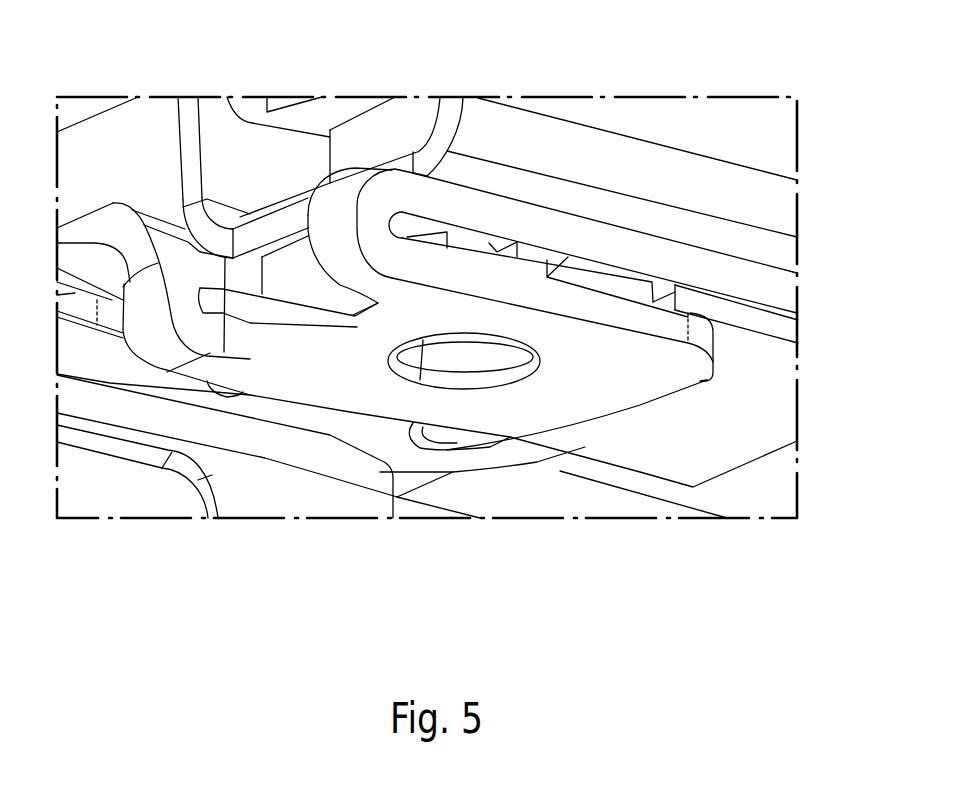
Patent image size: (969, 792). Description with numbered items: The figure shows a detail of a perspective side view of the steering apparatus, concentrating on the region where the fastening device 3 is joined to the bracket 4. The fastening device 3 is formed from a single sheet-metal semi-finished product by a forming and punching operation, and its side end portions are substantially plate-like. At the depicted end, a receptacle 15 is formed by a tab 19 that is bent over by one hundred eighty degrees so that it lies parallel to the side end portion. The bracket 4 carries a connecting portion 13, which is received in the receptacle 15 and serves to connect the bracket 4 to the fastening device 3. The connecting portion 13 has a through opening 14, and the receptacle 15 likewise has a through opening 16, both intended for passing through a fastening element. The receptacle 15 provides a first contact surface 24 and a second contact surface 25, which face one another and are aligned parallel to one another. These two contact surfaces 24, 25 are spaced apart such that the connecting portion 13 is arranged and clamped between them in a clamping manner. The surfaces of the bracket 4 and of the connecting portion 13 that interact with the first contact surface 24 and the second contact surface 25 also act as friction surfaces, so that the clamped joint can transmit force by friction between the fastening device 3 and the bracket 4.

The fastening device 3 is at (785, 244).
The bracket 4 is at (750, 425).
The connecting portion 13 is at (602, 282).
The through opening 14 is at (463, 353).
The receptacle 15 is at (668, 245).
The through opening 16 is at (465, 467).
The tab 19 is at (543, 415).
The first contact surface 24 is at (489, 243).
The second contact surface 25 is at (572, 258).